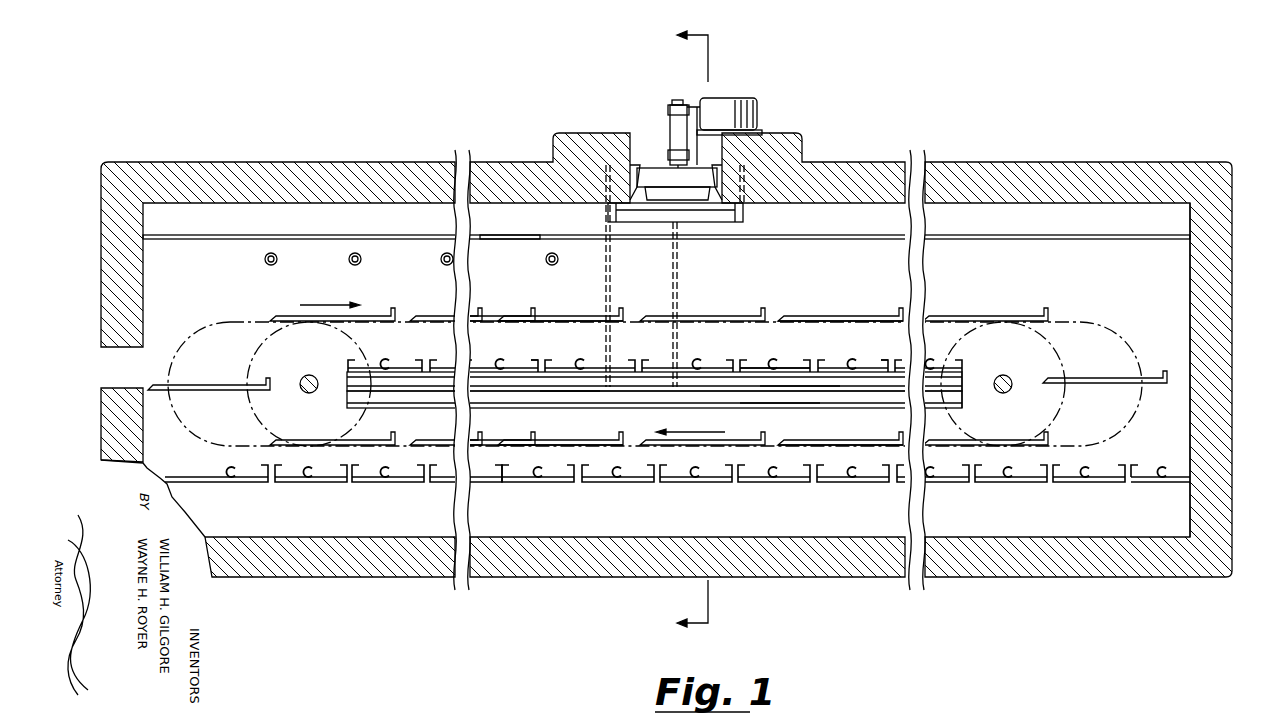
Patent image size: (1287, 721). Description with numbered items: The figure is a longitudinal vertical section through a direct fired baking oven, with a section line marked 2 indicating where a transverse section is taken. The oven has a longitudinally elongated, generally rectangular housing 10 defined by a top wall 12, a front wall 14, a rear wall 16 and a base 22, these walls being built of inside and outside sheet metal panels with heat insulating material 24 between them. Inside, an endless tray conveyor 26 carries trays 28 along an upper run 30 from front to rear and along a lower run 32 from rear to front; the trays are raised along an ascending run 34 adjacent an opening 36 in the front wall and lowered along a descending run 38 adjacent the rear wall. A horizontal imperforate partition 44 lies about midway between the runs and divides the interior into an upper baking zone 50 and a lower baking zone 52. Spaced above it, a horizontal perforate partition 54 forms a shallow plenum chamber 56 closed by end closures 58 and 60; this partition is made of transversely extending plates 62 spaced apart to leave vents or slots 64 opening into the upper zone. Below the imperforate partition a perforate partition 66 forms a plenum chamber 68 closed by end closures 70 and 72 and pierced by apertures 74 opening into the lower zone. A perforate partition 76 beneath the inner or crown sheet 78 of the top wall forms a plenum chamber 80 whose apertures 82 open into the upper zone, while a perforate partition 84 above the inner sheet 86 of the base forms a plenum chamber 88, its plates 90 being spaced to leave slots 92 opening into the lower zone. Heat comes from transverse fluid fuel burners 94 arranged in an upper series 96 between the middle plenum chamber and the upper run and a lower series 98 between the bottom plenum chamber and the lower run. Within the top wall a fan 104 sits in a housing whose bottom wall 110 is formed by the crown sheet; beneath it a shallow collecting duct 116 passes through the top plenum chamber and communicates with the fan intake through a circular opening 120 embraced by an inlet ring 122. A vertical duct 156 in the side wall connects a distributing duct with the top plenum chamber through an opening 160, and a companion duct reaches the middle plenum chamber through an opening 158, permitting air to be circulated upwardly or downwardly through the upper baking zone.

The section line 2- 2 is at (708, 332).
The housing 10 is at (1043, 160).
The top wall 12 is at (898, 160).
The front wall 14 is at (103, 298).
The rear wall 16 is at (1232, 366).
The base 22 is at (830, 578).
The heat insulating material 24 is at (830, 170).
The endless tray conveyor 26 is at (255, 317).
The trays 28 is at (292, 316).
The upper run 30 is at (523, 298).
The lower run 32 is at (521, 428).
The ascending run 34 is at (196, 413).
The opening 36 is at (112, 372).
The descending run 38 is at (1096, 373).
The horizontal imperforate partition 44 is at (830, 390).
The upper baking zone 50 is at (817, 298).
The lower baking zone 52 is at (824, 428).
The horizontal perforate partition 54 is at (758, 368).
The plenum chamber 56 is at (790, 385).
The end closure 58 is at (347, 382).
The end closure 60 is at (963, 380).
The transversely extending plates 62 is at (520, 368).
The vents or slots 64 is at (541, 363).
The horizontal perforate partition 66 is at (563, 403).
The plenum chamber 68 is at (780, 398).
The end closure 70 is at (347, 395).
The end closure 72 is at (963, 398).
The apertures 74 is at (398, 408).
The horizontal perforate partition 76 is at (392, 239).
The inner or crown sheet 78 is at (320, 207).
The plenum chamber 80 is at (426, 222).
The apertures 82 is at (500, 224).
The horizontal perforate partition 84 is at (375, 485).
The inner sheet 86 is at (441, 536).
The plenum chamber 88 is at (734, 491).
The transversely extending plates 90 is at (518, 485).
The vents or slots 92 is at (578, 485).
The fluid fuel burners 94 is at (622, 485).
The upper series 96 is at (389, 361).
The lower series 98 is at (229, 470).
The fan 104 is at (745, 207).
The bottom wall 110 is at (620, 212).
The collecting duct 116 is at (692, 213).
The circular opening 120 is at (704, 207).
The inlet ring 122 is at (665, 195).
The vertical duct 156 is at (558, 260).
The opening 158 is at (663, 430).
The opening 160 is at (748, 238).